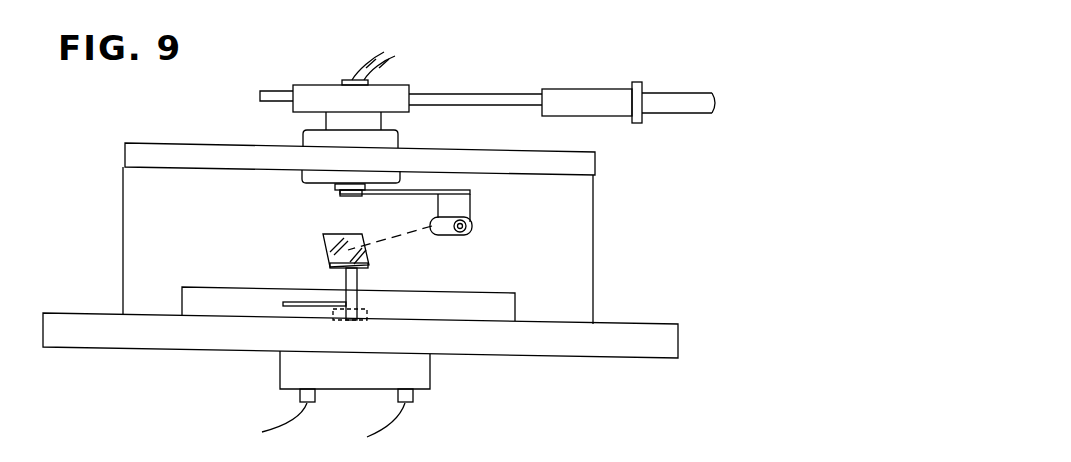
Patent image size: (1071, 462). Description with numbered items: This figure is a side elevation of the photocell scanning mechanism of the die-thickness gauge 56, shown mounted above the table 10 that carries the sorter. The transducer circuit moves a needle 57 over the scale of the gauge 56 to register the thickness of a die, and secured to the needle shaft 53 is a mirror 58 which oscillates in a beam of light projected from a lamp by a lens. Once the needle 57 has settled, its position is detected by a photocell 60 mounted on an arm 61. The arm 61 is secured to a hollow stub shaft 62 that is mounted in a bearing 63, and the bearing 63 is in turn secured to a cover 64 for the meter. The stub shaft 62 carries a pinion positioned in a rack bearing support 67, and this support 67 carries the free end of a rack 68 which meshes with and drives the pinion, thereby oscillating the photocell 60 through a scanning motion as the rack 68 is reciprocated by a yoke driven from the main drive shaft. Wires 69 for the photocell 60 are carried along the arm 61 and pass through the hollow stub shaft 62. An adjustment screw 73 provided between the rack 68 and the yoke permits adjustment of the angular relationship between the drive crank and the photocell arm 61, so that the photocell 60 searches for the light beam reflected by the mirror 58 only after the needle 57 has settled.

The table 10 is at (512, 350).
The needle shaft 53 is at (355, 286).
The gauge 56 is at (582, 255).
The needle 57 is at (300, 302).
The mirror 58 is at (335, 253).
The photocell 60 is at (447, 228).
The arm 61 is at (415, 192).
The hollow stub shaft 62 is at (350, 193).
The bearing 63 is at (317, 144).
The cover 64 is at (185, 143).
The rack bearing support 67 is at (388, 92).
The rack 68 is at (490, 97).
The wires 69 is at (368, 57).
The adjustment screw 73 is at (638, 116).